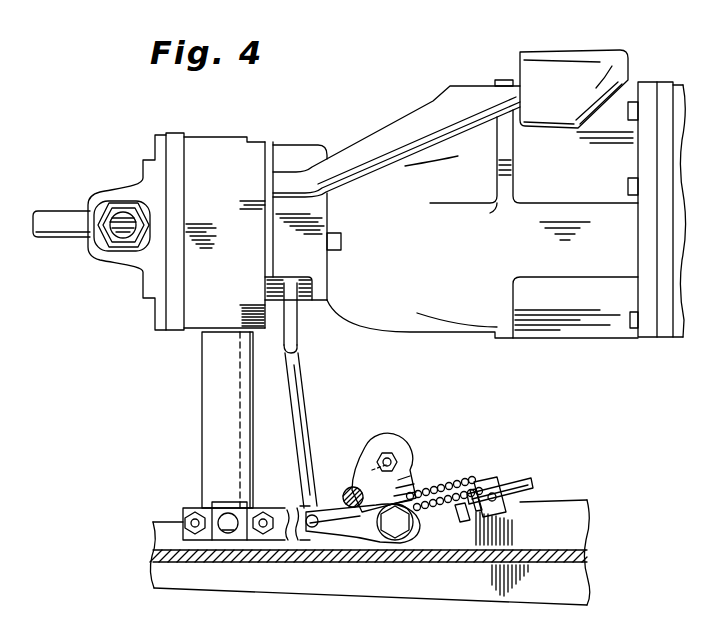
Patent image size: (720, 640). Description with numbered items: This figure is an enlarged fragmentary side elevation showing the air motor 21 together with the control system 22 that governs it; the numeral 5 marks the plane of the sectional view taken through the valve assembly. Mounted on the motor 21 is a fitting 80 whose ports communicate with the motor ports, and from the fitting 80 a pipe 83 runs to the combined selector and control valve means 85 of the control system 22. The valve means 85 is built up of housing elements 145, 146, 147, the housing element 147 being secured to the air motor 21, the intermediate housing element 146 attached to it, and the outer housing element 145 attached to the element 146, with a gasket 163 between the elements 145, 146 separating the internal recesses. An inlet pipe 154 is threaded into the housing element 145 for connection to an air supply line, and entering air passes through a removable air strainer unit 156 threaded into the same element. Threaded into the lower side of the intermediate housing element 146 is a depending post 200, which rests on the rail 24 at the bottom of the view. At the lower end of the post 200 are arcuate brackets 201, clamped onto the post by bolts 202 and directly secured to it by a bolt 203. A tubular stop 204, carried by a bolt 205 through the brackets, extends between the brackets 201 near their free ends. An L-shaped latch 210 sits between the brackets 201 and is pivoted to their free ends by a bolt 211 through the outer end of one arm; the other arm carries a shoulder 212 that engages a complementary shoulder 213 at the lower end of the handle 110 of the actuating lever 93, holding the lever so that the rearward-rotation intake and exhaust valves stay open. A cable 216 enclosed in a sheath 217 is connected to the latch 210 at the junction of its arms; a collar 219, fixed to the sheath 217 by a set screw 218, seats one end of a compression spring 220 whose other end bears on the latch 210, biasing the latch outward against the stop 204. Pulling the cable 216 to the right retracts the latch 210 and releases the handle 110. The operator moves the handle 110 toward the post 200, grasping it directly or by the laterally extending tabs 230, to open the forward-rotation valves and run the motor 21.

The section line indicator 5 is at (402, 52).
The air motor 21 is at (637, 78).
The control system 22 is at (303, 361).
The rail 24 is at (170, 589).
The fitting 80 is at (588, 54).
The pipe 83 is at (468, 98).
The combined selector and control valve means 85 is at (228, 133).
The actuating lever 93 is at (301, 296).
The handle 110 is at (304, 410).
The housing element 145 is at (153, 134).
The housing element 146 is at (250, 141).
The housing element 147 is at (306, 144).
The pipe 154 is at (50, 212).
The air strainer unit 156 is at (98, 259).
The gasket 163 is at (186, 133).
The post 200 is at (207, 402).
The arcuate brackets 201 is at (280, 540).
The bolts 202 is at (240, 503).
The bolt 203 is at (230, 528).
The tubular stop 204 is at (360, 468).
The bolt 205 is at (353, 487).
The L-shaped latch 210 is at (400, 545).
The bolt 211 is at (397, 461).
The shoulder 212 is at (320, 536).
The shoulder 213 is at (297, 540).
The cable 216 is at (430, 522).
The sheath 217 is at (517, 489).
The set screw 218 is at (492, 493).
The collar 219 is at (477, 488).
The compression spring 220 is at (463, 520).
The tabs 230 is at (298, 342).